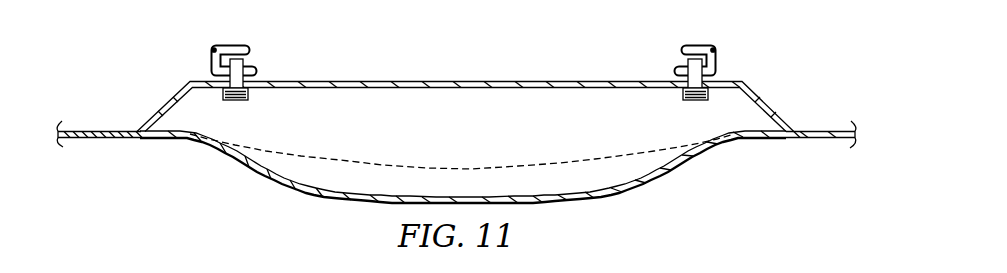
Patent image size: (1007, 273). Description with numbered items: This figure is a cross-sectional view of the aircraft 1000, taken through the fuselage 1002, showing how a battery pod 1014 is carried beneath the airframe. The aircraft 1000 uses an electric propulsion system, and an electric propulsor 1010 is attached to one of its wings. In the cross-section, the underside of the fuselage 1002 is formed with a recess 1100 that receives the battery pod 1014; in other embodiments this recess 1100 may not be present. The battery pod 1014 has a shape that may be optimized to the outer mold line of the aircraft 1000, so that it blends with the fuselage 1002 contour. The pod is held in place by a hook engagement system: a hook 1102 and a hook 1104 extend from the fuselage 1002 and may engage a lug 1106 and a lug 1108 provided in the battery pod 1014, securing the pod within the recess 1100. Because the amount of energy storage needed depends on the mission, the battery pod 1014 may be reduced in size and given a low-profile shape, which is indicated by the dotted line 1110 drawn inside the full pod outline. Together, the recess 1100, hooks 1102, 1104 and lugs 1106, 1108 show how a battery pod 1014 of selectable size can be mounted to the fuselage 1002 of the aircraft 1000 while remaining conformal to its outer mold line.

The aircraft 1000 is at (456, 140).
The fuselage 1002 is at (825, 144).
The electric propulsor 1010 is at (106, 139).
The battery pod 1014 is at (243, 166).
The recess 1100 is at (455, 90).
The hook 1102 is at (212, 64).
The hook 1104 is at (722, 65).
The lug 1106 is at (239, 101).
The lug 1108 is at (692, 101).
The dotted line 1110 is at (448, 168).